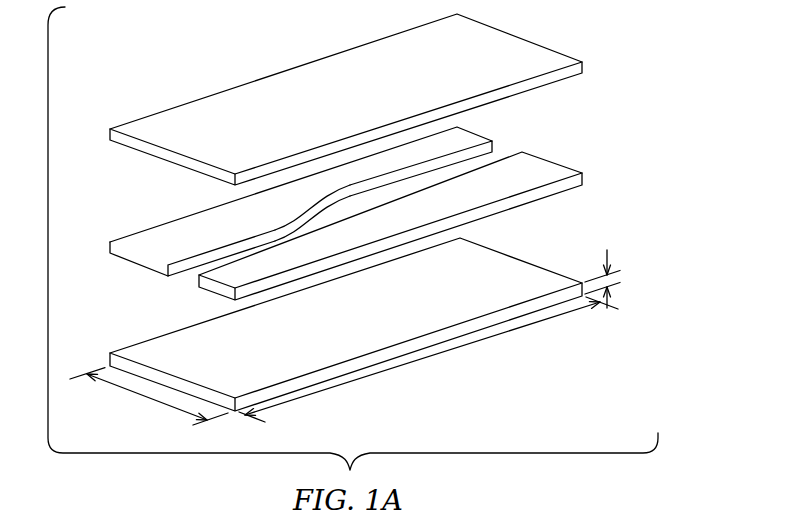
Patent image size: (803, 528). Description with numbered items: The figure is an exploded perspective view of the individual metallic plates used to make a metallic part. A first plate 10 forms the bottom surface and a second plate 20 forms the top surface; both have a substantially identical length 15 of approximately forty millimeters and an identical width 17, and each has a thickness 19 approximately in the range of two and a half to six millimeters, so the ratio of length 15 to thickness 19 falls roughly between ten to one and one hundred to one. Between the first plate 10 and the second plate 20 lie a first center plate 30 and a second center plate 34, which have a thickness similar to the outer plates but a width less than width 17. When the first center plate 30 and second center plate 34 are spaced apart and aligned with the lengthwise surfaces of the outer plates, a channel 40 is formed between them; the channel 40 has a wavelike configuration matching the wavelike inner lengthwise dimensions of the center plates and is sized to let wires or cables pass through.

The first plate 10 is at (158, 330).
The length 15 is at (430, 358).
The width 17 is at (147, 398).
The thickness 19 is at (608, 256).
The second plate 20 is at (158, 100).
The first center plate 30 is at (592, 188).
The second center plate 34 is at (158, 213).
The channel 40 is at (503, 148).